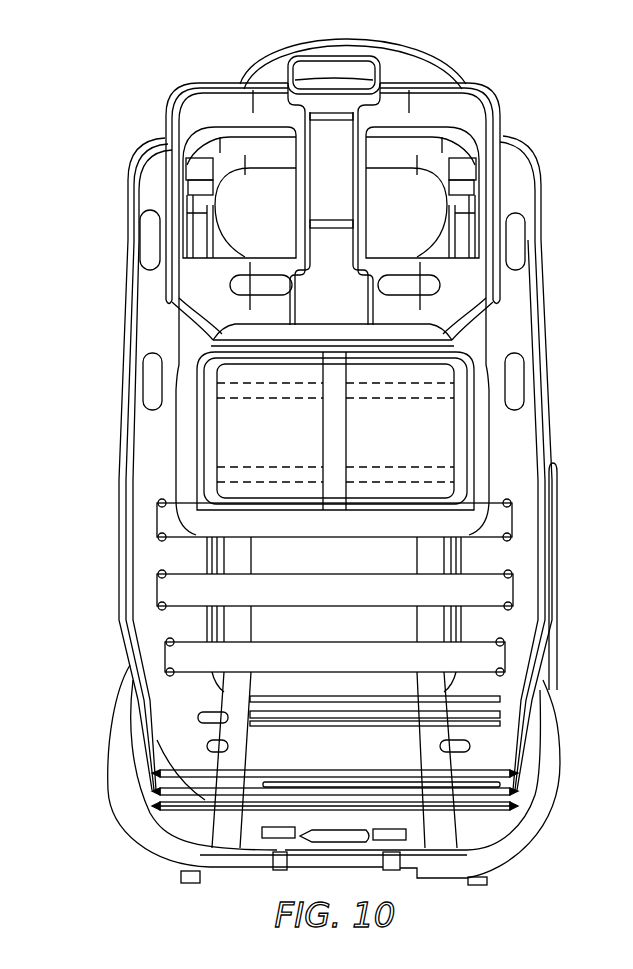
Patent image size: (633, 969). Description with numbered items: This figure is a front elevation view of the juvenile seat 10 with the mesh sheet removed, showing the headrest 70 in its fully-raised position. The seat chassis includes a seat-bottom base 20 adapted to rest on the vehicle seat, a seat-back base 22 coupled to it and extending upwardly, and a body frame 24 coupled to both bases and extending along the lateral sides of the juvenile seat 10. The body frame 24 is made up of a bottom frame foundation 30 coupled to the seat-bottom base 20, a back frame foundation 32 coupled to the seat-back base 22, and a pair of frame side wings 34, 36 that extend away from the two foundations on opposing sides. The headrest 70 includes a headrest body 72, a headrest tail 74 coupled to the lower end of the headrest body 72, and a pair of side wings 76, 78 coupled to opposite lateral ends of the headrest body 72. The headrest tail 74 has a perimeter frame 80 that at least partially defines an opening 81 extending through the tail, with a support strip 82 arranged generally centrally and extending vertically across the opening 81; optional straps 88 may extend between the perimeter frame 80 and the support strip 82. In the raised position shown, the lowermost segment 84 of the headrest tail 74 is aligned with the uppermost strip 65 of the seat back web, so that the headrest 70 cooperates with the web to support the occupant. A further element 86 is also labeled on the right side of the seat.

The juvenile seat 10 is at (125, 100).
The seat-bottom base 20 is at (277, 870).
The seat-back base 22 is at (415, 42).
The body frame 24 is at (333, 439).
The bottom frame foundation 30 is at (320, 800).
The back frame foundation 32 is at (505, 148).
The frame side wing 34 is at (567, 786).
The frame side wing 36 is at (107, 740).
The uppermost strip 65 is at (370, 498).
The headrest 70 is at (408, 73).
The headrest body 72 is at (458, 82).
The headrest tail 74 is at (165, 421).
The side wing 76 is at (535, 172).
The side wing 78 is at (163, 190).
The perimeter frame 80 is at (178, 474).
The opening 81 is at (261, 383).
The support strip 82 is at (338, 435).
The lowermost segment 84 is at (186, 520).
The side member 86 is at (591, 576).
The straps 88 is at (218, 385).